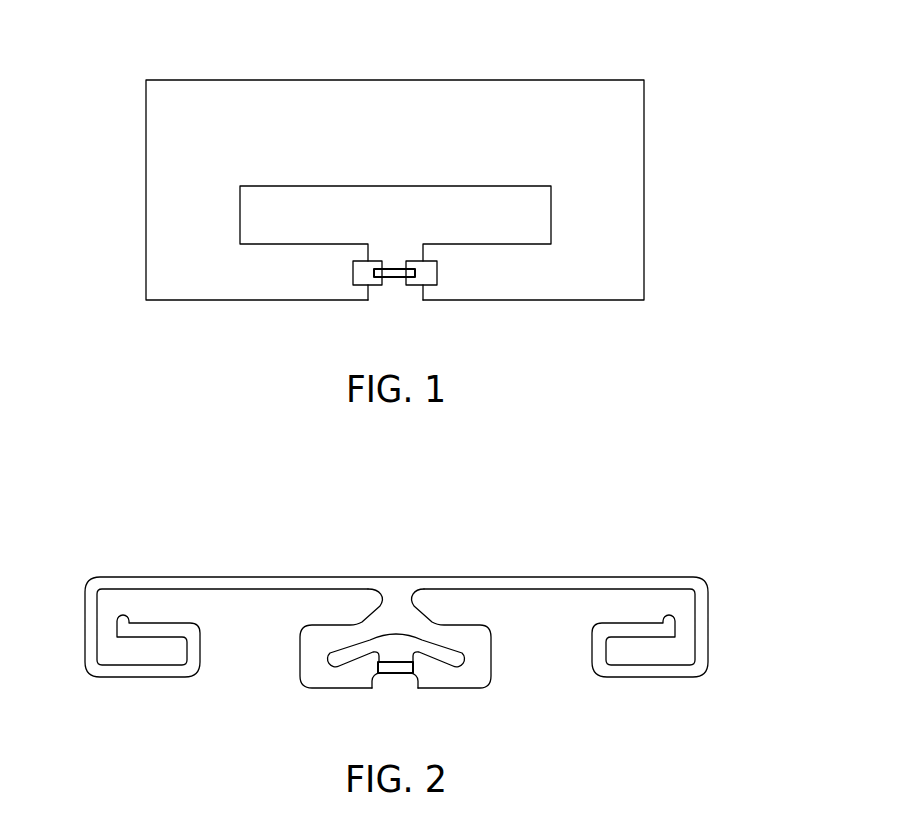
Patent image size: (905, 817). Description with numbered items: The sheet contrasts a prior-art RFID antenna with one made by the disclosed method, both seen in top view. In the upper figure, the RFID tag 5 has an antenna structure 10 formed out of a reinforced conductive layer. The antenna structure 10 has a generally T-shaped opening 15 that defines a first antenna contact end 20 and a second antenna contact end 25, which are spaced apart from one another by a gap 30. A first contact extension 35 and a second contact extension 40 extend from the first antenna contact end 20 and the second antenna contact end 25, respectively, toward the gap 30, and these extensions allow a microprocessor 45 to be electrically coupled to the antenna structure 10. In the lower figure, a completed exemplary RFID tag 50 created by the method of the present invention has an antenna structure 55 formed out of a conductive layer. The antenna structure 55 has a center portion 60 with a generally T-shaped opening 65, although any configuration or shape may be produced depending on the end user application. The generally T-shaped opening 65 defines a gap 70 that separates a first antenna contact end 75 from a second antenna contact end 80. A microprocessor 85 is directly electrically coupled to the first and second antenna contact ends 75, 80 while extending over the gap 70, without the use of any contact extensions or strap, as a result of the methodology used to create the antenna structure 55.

In FIG. 1, the RFID tag 5 is at (670, 103).
In FIG. 1, the antenna structure 10 is at (305, 92).
In FIG. 1, the generally T-shaped opening 15 is at (305, 197).
In FIG. 1, the first antenna contact end 20 is at (362, 297).
In FIG. 1, the second antenna contact end 25 is at (425, 297).
In FIG. 1, the gap 30 is at (394, 286).
In FIG. 1, the first contact extension 35 is at (352, 273).
In FIG. 1, the second contact extension 40 is at (438, 273).
In FIG. 1, the microprocessor 45 is at (396, 262).
In FIG. 2, the RFID tag 50 is at (562, 541).
In FIG. 2, the antenna structure 55 is at (708, 614).
In FIG. 2, the center portion 60 is at (491, 641).
In FIG. 2, the generally T-shaped opening 65 is at (343, 655).
In FIG. 2, the gap 70 is at (395, 676).
In FIG. 2, the first antenna contact end 75 is at (376, 682).
In FIG. 2, the second antenna contact end 80 is at (414, 682).
In FIG. 2, the microprocessor 85 is at (397, 660).